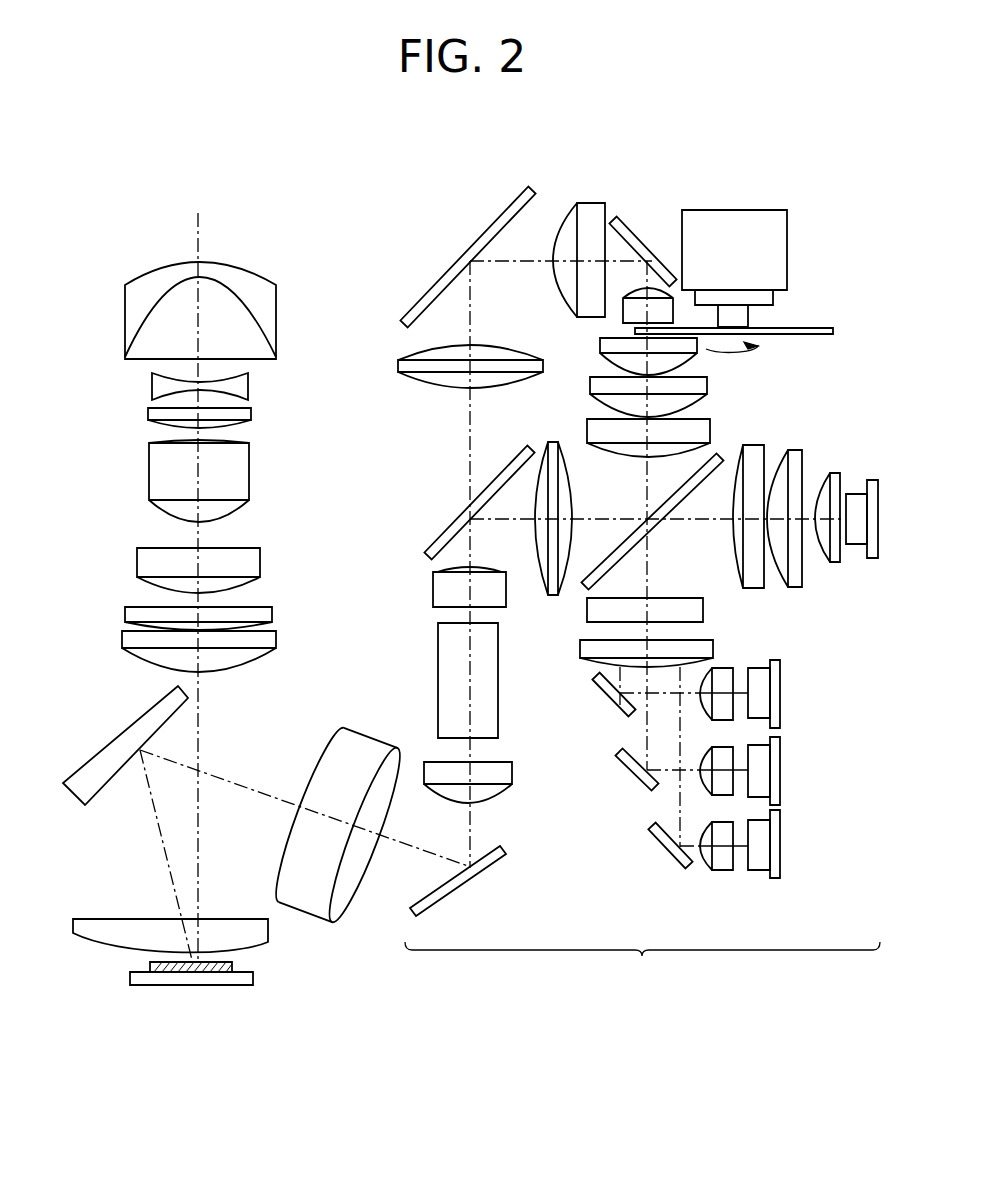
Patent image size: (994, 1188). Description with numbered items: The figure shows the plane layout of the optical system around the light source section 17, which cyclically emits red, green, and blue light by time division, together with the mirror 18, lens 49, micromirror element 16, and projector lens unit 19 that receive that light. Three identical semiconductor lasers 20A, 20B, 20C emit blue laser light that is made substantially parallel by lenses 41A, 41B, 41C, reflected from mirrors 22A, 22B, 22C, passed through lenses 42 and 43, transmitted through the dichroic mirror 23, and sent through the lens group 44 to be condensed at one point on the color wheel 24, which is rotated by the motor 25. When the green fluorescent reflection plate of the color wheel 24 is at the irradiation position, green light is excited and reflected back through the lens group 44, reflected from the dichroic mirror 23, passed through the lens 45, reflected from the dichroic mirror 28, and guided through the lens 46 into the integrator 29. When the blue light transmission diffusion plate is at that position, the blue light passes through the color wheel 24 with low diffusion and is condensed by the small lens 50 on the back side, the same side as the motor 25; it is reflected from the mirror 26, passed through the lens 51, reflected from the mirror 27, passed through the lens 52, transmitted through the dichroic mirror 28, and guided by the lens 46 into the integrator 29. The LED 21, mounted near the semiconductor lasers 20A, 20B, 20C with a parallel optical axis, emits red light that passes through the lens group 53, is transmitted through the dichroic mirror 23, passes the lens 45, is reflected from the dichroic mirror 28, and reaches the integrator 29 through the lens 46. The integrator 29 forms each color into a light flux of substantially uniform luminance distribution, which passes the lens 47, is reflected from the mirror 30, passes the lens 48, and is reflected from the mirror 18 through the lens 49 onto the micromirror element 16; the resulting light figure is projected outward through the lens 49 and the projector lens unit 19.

The micromirror element 16 is at (177, 986).
The light source section 17 is at (642, 965).
The mirror 18 is at (107, 748).
The projector lens unit 19 is at (290, 263).
The semiconductor laser 20A is at (783, 687).
The semiconductor laser 20B is at (783, 748).
The semiconductor laser 20C is at (783, 823).
The LED 21 is at (872, 478).
The mirror 22A is at (617, 705).
The mirror 22B is at (643, 783).
The mirror 22C is at (675, 858).
The dichroic mirror 23 is at (717, 455).
The color wheel 24 is at (805, 335).
The motor 25 is at (778, 253).
The mirror 26 is at (633, 233).
The mirror 27 is at (430, 295).
The dichroic mirror 28 is at (445, 533).
The integrator 29 is at (488, 697).
The mirror 30 is at (493, 858).
The lens 41A is at (725, 675).
The lens 41B is at (728, 782).
The lens 41C is at (718, 862).
The lens 42 is at (587, 650).
The lens 43 is at (678, 603).
The lens group 44 is at (583, 335).
The lens 45 is at (568, 490).
The lens 46 is at (440, 593).
The lens 47 is at (500, 773).
The lens 48 is at (363, 742).
The lens 49 is at (125, 927).
The lens 50 is at (627, 310).
The lens 51 is at (590, 212).
The lens 52 is at (400, 367).
The lens group 53 is at (728, 595).